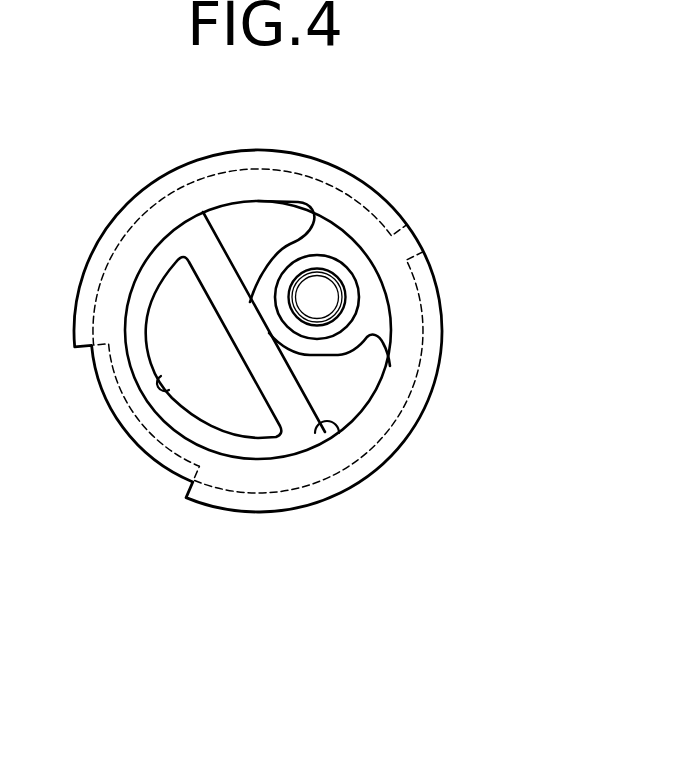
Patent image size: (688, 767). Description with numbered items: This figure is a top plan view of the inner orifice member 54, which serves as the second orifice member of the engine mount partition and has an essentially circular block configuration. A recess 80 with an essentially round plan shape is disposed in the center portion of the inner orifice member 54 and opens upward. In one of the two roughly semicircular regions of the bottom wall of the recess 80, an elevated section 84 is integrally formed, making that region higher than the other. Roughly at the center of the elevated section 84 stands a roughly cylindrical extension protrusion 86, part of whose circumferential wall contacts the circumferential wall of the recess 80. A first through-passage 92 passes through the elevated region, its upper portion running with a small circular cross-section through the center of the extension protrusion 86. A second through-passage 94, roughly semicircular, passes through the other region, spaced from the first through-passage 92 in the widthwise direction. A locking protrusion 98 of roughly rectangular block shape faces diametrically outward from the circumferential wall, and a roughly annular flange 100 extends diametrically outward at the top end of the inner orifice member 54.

The inner orifice member 54 is at (282, 337).
The recess 80 is at (340, 437).
The elevated section 84 is at (350, 382).
The extension protrusion 86 is at (383, 222).
The first through-passage 92 is at (338, 314).
The second through-passage 94 is at (169, 389).
The locking protrusion 98 is at (418, 233).
The annular flange 100 is at (257, 502).